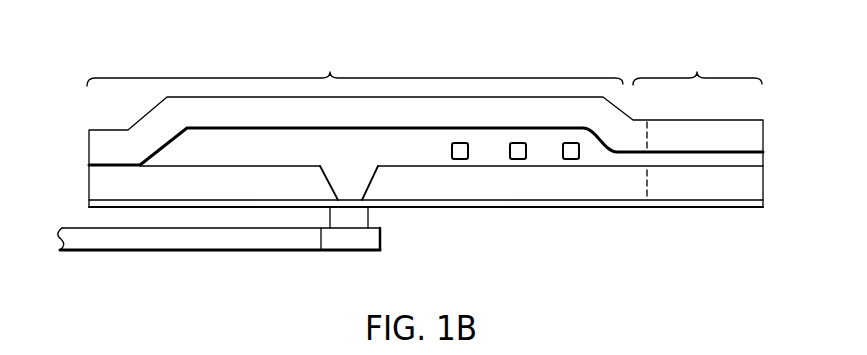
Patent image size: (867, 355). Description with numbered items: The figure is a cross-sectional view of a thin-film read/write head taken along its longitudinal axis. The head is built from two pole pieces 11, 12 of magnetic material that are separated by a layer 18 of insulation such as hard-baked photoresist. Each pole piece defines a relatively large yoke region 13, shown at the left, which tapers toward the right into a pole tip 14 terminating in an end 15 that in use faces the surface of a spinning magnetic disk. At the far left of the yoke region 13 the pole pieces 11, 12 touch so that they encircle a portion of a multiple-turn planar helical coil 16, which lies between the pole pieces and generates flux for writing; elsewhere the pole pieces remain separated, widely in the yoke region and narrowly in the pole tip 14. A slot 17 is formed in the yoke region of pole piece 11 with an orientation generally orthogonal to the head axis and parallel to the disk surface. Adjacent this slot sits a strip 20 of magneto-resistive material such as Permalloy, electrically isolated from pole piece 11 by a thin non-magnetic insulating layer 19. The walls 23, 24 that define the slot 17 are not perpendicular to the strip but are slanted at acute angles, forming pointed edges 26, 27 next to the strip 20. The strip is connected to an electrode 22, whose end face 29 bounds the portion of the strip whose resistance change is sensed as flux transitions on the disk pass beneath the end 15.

The pole piece 11 is at (102, 183).
The pole piece 12 is at (104, 139).
The yoke region 13 is at (355, 62).
The pole tip 14 is at (697, 66).
The end 15 is at (747, 146).
The planar helical coil 16 is at (567, 145).
The slot 17 is at (349, 180).
The layer of insulation 18 is at (599, 157).
The insulating layer 19 is at (700, 203).
The magneto-resistive strip 20 is at (358, 217).
The electrode 22 is at (173, 243).
The wall 23 is at (326, 183).
The wall 24 is at (374, 187).
The pointed edge 26 is at (337, 197).
The pointed edge 27 is at (361, 197).
The end face 29 is at (352, 243).